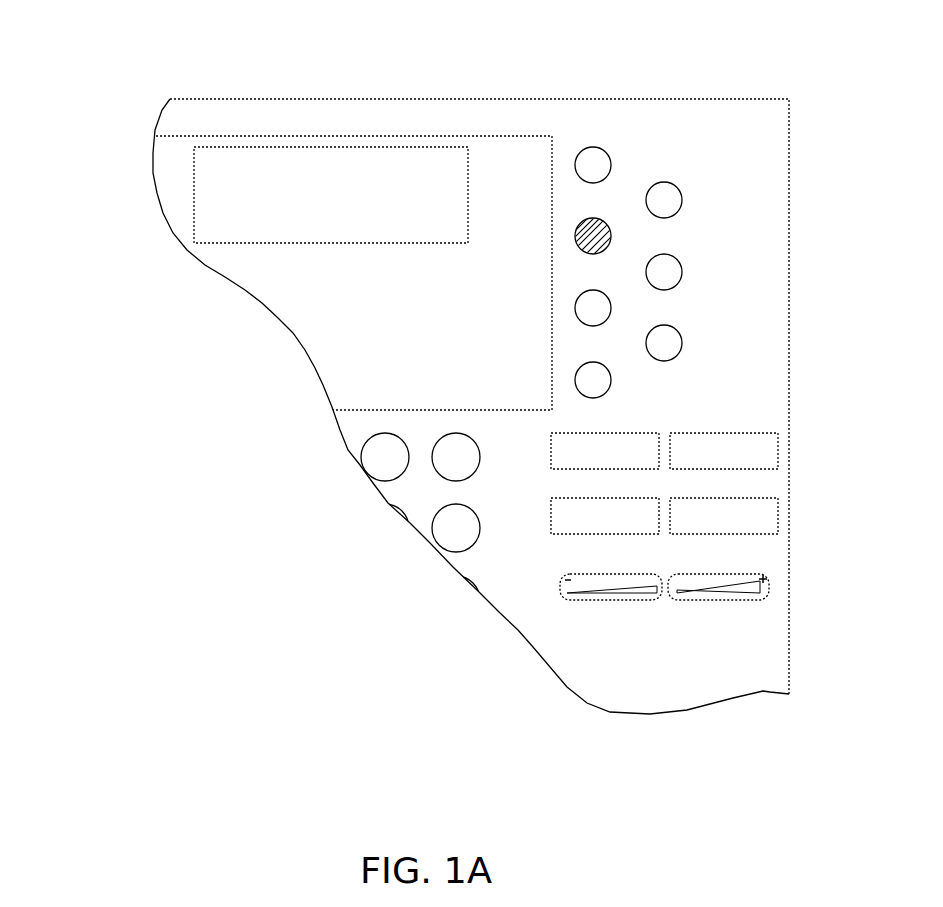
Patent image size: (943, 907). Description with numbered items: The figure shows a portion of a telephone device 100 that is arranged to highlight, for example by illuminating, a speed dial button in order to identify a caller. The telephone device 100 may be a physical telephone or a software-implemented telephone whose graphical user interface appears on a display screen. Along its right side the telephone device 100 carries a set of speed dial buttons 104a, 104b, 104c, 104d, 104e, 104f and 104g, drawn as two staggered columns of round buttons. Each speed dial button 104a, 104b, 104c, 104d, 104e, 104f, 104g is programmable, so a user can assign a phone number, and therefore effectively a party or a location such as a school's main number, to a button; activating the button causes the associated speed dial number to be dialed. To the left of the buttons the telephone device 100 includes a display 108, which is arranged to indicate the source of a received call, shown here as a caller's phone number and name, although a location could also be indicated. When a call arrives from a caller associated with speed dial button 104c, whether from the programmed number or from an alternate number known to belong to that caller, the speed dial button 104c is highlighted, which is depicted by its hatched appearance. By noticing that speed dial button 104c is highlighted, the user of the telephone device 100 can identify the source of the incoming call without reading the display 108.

The telephone device 100 is at (120, 54).
The display 108 is at (325, 147).
The speed dial button 104a is at (593, 147).
The speed dial button 104b is at (681, 195).
The speed dial button 104c is at (604, 221).
The speed dial button 104d is at (681, 267).
The speed dial button 104e is at (604, 293).
The speed dial button 104f is at (681, 338).
The speed dial button 104g is at (604, 365).